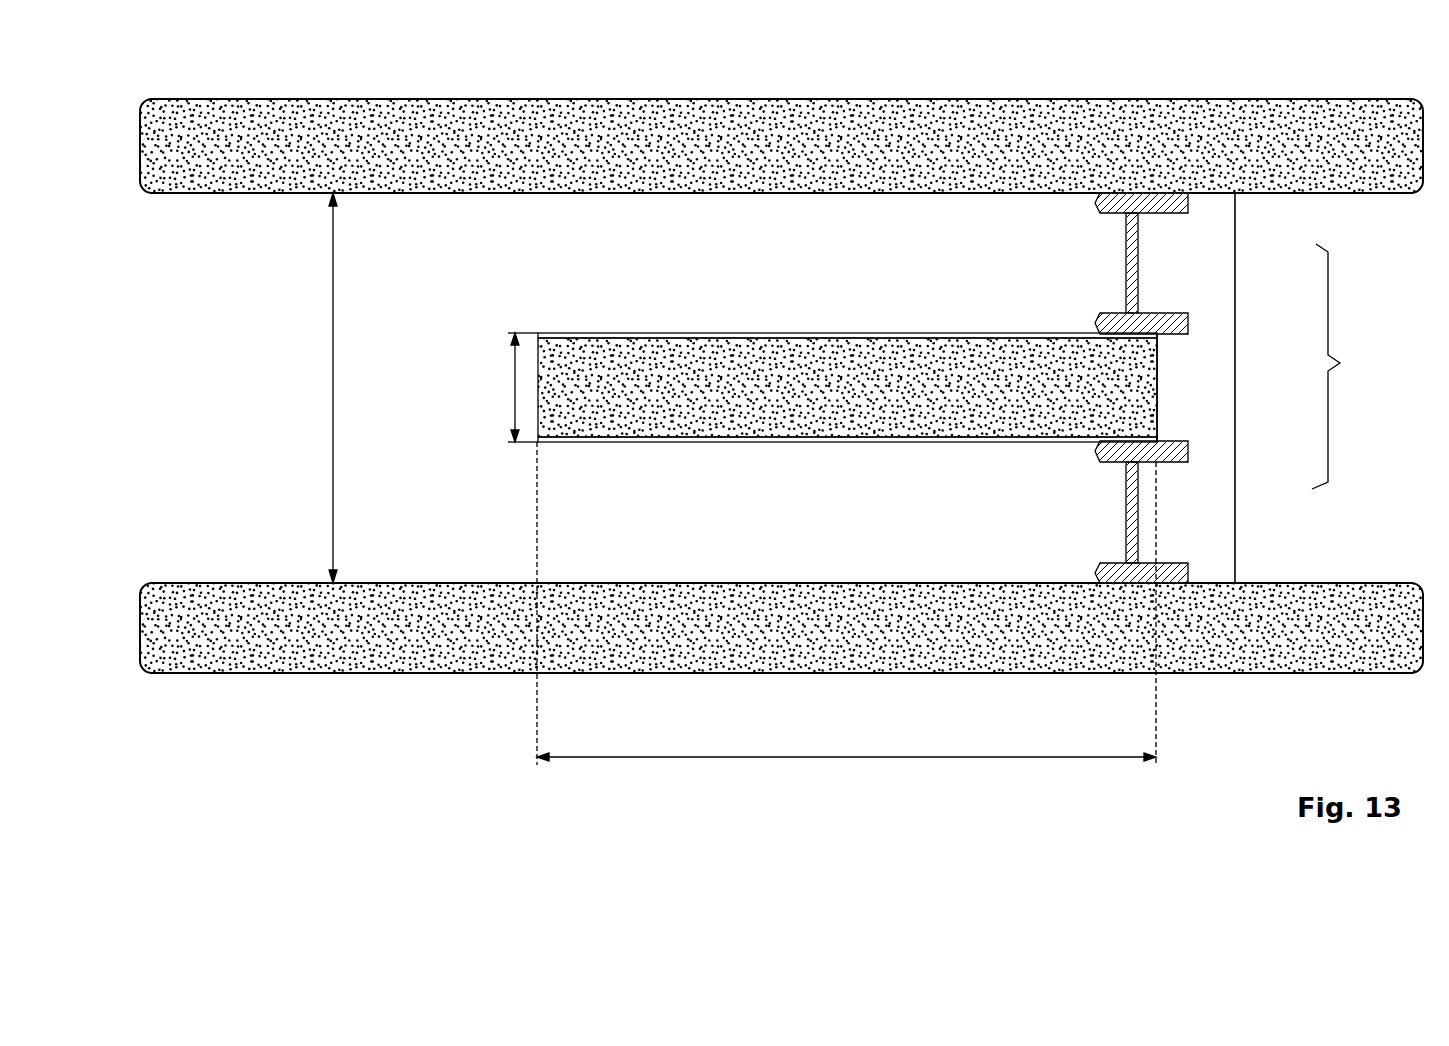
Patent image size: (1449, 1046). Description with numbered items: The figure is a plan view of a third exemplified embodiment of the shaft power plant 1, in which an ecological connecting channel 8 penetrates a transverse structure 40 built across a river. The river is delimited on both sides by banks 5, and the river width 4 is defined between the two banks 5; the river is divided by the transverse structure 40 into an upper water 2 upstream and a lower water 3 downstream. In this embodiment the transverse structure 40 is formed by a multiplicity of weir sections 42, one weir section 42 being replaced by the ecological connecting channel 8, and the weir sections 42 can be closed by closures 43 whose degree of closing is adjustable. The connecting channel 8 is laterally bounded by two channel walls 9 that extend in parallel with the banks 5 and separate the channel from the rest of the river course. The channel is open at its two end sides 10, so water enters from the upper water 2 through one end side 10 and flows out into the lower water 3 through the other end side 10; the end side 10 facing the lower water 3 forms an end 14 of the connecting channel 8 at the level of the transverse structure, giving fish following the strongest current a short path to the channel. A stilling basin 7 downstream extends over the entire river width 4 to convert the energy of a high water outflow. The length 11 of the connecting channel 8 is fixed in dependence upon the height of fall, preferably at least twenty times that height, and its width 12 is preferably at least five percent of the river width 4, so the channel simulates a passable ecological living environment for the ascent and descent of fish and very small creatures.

The shaft power plant 1 is at (222, 305).
The upper water 2 is at (442, 249).
The lower water 3 is at (1267, 232).
The river width 4 is at (333, 380).
The banks 5 is at (1365, 100).
The stilling basin 7 is at (1237, 545).
The ecological connecting channel 8 is at (653, 338).
The channel walls 9 is at (785, 333).
The end sides 10 is at (846, 388).
The length 11 is at (887, 757).
The width 12 is at (508, 383).
The end 14 is at (1178, 347).
The transverse structure 40 is at (1217, 388).
The weir sections 42 is at (1184, 388).
The closures 43 is at (1128, 262).